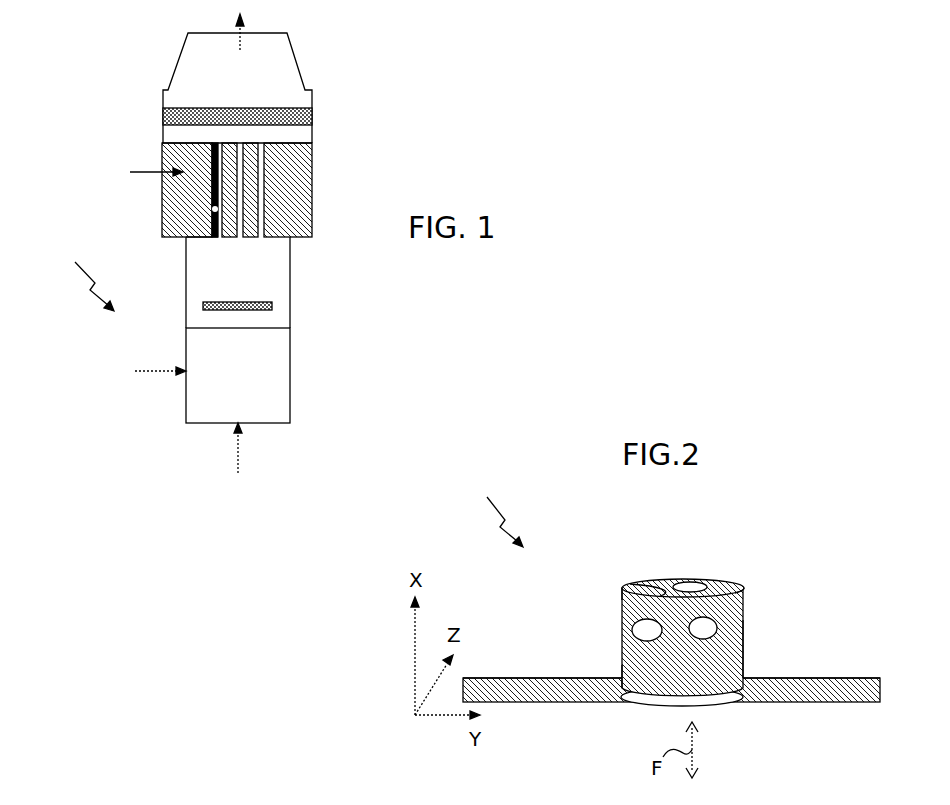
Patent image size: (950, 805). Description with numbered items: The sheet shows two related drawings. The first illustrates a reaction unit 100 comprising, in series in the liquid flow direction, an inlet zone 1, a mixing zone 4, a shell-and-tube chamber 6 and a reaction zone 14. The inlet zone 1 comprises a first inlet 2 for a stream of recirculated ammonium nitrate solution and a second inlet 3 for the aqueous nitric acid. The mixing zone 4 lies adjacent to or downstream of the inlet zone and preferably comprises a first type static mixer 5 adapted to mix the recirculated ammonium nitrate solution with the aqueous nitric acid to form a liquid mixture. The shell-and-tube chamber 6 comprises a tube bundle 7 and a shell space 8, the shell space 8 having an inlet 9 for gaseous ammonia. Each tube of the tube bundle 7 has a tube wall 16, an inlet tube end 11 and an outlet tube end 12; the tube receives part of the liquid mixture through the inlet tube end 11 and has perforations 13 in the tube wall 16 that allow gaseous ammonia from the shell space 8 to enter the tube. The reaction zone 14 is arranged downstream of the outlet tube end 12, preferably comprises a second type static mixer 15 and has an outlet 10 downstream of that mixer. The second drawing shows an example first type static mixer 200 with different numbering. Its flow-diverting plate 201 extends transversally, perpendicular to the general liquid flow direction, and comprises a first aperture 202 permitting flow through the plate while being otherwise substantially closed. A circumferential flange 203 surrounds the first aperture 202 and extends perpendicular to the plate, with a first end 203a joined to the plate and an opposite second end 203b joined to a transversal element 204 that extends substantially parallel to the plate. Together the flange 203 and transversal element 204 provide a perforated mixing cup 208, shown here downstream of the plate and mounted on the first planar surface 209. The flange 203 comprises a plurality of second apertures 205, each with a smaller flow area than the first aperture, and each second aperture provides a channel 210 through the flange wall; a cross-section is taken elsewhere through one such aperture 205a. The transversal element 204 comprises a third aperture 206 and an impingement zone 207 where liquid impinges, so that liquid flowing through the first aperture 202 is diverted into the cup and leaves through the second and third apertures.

In FIG. 1, the reaction unit 100 is at (78, 273).
In FIG. 1, the inlet zone 1 is at (290, 360).
In FIG. 1, the first inlet 2 is at (229, 448).
In FIG. 1, the second inlet 3 is at (159, 359).
In FIG. 1, the mixing zone 4 is at (290, 276).
In FIG. 1, the first type static mixer 5 is at (272, 306).
In FIG. 1, the shell-and-tube chamber 6 is at (226, 185).
In FIG. 1, the tube bundle 7 is at (265, 228).
In FIG. 1, the shell space 8 is at (290, 165).
In FIG. 1, the inlet for gaseous NH3 9 is at (146, 174).
In FIG. 1, the outlet 10 is at (243, 33).
In FIG. 1, the inlet tube end 11 is at (213, 240).
In FIG. 1, the outlet tube end 12 is at (215, 143).
In FIG. 1, the perforations 13 is at (212, 211).
In FIG. 1, the reaction zone 14 is at (288, 84).
In FIG. 1, the second type static mixer 15 is at (312, 115).
In FIG. 1, the tube wall 16 is at (215, 195).
In FIG. 2, the first type static mixer 200 is at (495, 510).
In FIG. 2, the flow-diverting plate 201 is at (517, 680).
In FIG. 2, the first aperture 202 is at (612, 688).
In FIG. 2, the circumferential flange 203 is at (622, 628).
In FIG. 2, the first end 203a is at (622, 675).
In FIG. 2, the second end 203b is at (622, 590).
In FIG. 2, the transversal element 204 is at (733, 581).
In FIG. 2, the second apertures 205 is at (743, 636).
In FIG. 2, the aperture 205a is at (745, 650).
In FIG. 2, the third aperture 206 is at (692, 584).
In FIG. 2, the impingement zone 207 is at (655, 581).
In FIG. 2, the mixing cup 208 is at (745, 590).
In FIG. 2, the first planar surface 209 is at (808, 676).
In FIG. 2, the channel 210 is at (705, 628).